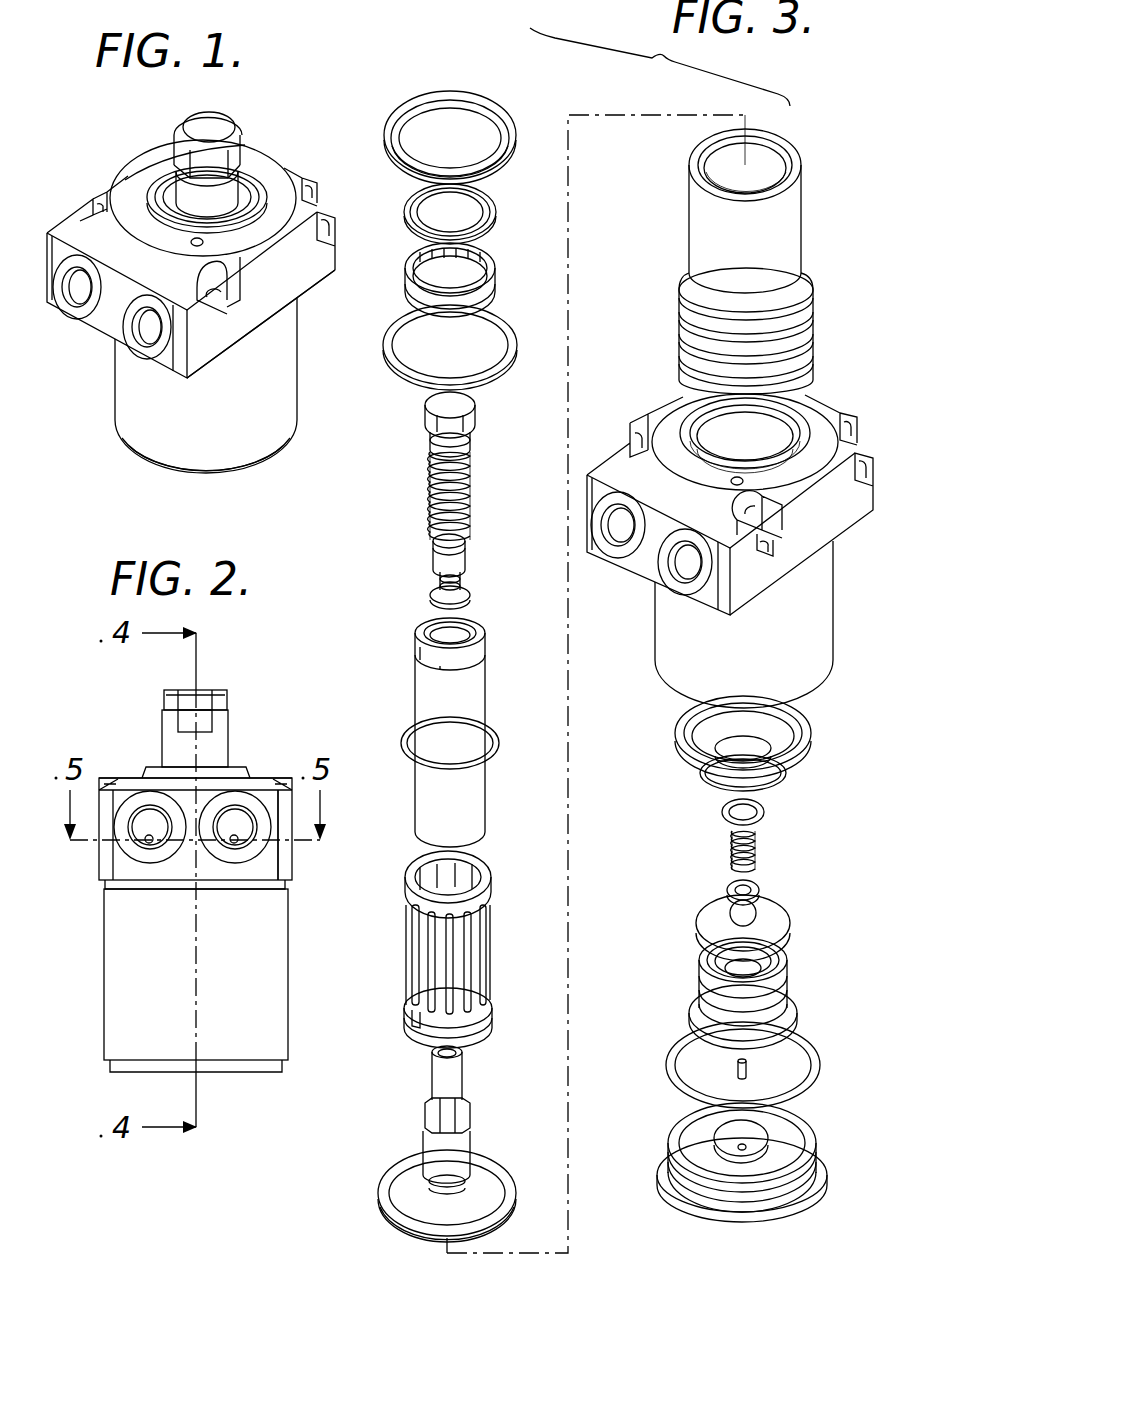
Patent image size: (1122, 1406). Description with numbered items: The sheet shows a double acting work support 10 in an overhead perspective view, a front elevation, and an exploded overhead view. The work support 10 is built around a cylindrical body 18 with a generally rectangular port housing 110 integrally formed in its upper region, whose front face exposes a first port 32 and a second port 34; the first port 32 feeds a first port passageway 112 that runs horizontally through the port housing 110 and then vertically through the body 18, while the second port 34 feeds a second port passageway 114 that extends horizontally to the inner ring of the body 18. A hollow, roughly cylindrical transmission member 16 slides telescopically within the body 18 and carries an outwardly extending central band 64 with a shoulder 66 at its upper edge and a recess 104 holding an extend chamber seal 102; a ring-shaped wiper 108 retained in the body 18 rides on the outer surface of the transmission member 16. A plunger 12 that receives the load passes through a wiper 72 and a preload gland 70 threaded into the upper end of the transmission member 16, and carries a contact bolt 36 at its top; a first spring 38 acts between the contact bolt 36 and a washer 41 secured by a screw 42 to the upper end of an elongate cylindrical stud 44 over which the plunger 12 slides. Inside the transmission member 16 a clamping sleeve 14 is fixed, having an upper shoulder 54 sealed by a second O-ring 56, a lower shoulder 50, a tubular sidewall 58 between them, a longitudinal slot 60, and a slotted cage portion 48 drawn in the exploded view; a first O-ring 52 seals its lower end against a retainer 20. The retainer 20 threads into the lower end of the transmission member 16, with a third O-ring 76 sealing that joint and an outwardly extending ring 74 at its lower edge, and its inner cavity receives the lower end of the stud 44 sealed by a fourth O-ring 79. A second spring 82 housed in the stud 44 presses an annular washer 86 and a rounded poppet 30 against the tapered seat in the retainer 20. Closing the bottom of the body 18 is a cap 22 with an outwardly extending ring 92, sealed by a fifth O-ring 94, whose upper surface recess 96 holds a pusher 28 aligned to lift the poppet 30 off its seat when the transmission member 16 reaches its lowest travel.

In FIG. 1, the double acting work support 10 is at (118, 142).
In FIG. 2, the double acting work support 10 is at (83, 727).
In FIG. 3, the double acting work support 10 is at (808, 104).
In FIG. 1, the plunger 12 is at (165, 190).
In FIG. 2, the plunger 12 is at (168, 740).
In FIG. 3, the plunger 12 is at (475, 686).
In FIG. 3, the clamping sleeve 14 is at (488, 850).
In FIG. 1, the transmission member 16 is at (258, 178).
In FIG. 2, the transmission member 16 is at (240, 771).
In FIG. 3, the transmission member 16 is at (672, 246).
In FIG. 1, the body 18 is at (280, 400).
In FIG. 2, the body 18 is at (115, 988).
In FIG. 3, the body 18 is at (830, 605).
In FIG. 3, the retainer 20 is at (808, 951).
In FIG. 3, the cap 22 is at (656, 1106).
In FIG. 3, the pusher 28 is at (748, 1068).
In FIG. 3, the poppet 30 is at (734, 909).
In FIG. 1, the first port 32 is at (142, 340).
In FIG. 2, the first port 32 is at (262, 838).
In FIG. 3, the first port 32 is at (688, 577).
In FIG. 1, the second port 34 is at (74, 297).
In FIG. 2, the second port 34 is at (136, 841).
In FIG. 3, the second port 34 is at (618, 536).
In FIG. 1, the contact bolt 36 is at (207, 123).
In FIG. 2, the contact bolt 36 is at (206, 695).
In FIG. 3, the contact bolt 36 is at (470, 422).
In FIG. 3, the first spring 38 is at (432, 478).
In FIG. 3, the washer 41 is at (463, 590).
In FIG. 3, the screw 42 is at (440, 560).
In FIG. 3, the stud 44 is at (465, 1140).
In FIG. 3, the filter cage 48 is at (488, 946).
In FIG. 3, the lower shoulder 50 is at (490, 1010).
In FIG. 3, the first O-ring 52 is at (780, 780).
In FIG. 3, the upper shoulder 54 is at (488, 880).
In FIG. 3, the second O-ring 56 is at (410, 736).
In FIG. 3, the tubular sidewall 58 is at (406, 965).
In FIG. 3, the longitudinal slot 60 is at (414, 1020).
In FIG. 3, the central band 64 is at (810, 315).
In FIG. 3, the shoulder 66 is at (808, 272).
In FIG. 3, the preload gland 70 is at (488, 272).
In FIG. 1, the wiper 72 is at (162, 190).
In FIG. 3, the wiper 72 is at (480, 206).
In FIG. 3, the outwardly extending ring 74 is at (800, 1008).
In FIG. 3, the third O-ring 76 is at (700, 931).
In FIG. 3, the fourth O-ring 79 is at (765, 812).
In FIG. 3, the second spring 82 is at (728, 843).
In FIG. 3, the washer 86 is at (755, 885).
In FIG. 1, the outwardly extending ring 92 is at (205, 470).
In FIG. 2, the outwardly extending ring 92 is at (230, 1069).
In FIG. 3, the outwardly extending ring 92 is at (765, 1213).
In FIG. 3, the fifth O-ring 94 is at (668, 1055).
In FIG. 3, the upper surface recess 96 is at (760, 1140).
In FIG. 3, the extend chamber seal 102 is at (680, 740).
In FIG. 3, the recess 104 is at (690, 345).
In FIG. 1, the wiper 108 is at (152, 205).
In FIG. 3, the wiper 108 is at (472, 126).
In FIG. 1, the port housing 110 is at (312, 272).
In FIG. 2, the port housing 110 is at (290, 878).
In FIG. 2, the first port passageway 112 is at (232, 845).
In FIG. 2, the second port passageway 114 is at (150, 845).